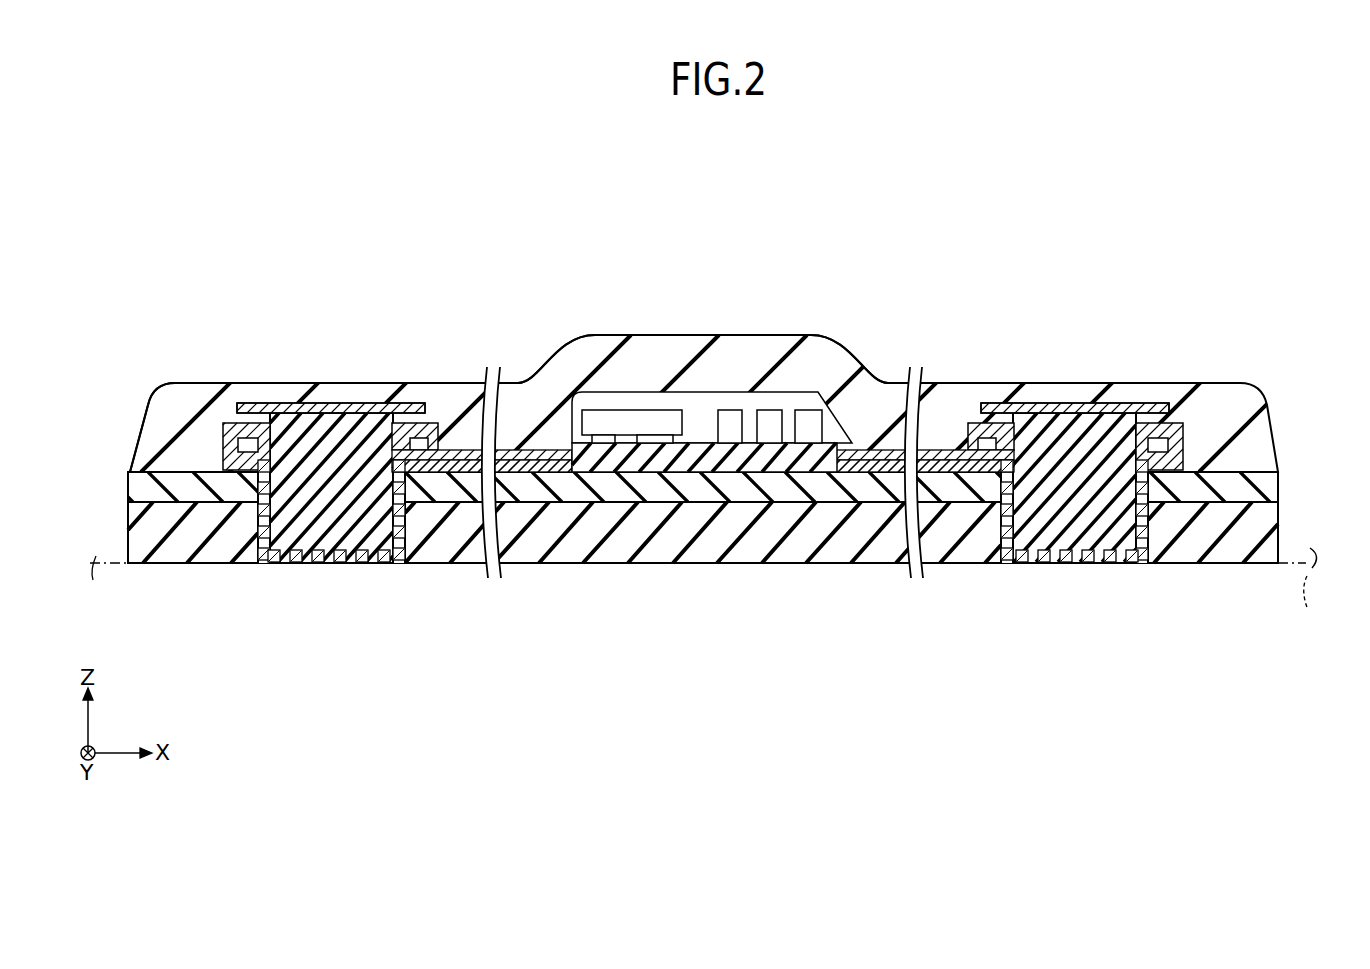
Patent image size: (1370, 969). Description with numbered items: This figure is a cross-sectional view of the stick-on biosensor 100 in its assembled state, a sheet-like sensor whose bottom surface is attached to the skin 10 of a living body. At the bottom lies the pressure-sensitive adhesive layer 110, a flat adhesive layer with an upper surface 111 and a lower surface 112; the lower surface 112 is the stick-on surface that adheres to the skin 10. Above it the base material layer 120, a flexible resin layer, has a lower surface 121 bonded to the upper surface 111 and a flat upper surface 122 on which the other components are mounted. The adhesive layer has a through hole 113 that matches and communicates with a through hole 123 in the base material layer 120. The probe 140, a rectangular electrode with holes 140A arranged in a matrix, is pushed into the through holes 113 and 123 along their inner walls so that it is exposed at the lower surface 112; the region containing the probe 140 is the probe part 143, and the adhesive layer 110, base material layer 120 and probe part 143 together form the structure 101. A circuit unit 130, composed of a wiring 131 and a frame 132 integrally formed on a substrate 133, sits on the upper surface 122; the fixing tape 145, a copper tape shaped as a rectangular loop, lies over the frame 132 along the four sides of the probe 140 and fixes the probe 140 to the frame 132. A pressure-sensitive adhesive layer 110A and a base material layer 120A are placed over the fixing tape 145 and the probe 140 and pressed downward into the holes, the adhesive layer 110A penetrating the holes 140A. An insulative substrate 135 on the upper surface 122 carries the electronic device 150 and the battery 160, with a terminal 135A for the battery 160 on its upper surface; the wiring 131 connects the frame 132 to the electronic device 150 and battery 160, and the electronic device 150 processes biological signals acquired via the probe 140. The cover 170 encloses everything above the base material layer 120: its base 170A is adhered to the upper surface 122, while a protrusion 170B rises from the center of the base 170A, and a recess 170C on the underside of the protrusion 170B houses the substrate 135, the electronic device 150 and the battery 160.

The skin 10 is at (1310, 582).
The stick-on biosensor 100 is at (1335, 301).
The structure 101 is at (710, 565).
The pressure-sensitive adhesive layer 110 is at (1260, 533).
The pressure-sensitive adhesive layer 110A is at (338, 437).
The upper surface 111 is at (168, 500).
The lower surface 112 is at (963, 565).
The through hole 113 is at (263, 520).
The base material layer 120 is at (1260, 488).
The base material layer 120A is at (288, 478).
The lower surface 121 is at (185, 503).
The upper surface 122 is at (178, 470).
The through hole 123 is at (262, 468).
The circuit unit 130 is at (573, 280).
The wiring 131 is at (452, 455).
The frame 132 is at (410, 407).
The substrate 133 is at (532, 458).
The substrate 135 is at (580, 442).
The terminal 135A is at (655, 436).
The probe 140 is at (245, 442).
The holes 140A is at (352, 570).
The probe part 143 is at (403, 632).
The fixing tape 145 is at (227, 455).
The electronic device 150 is at (808, 410).
The battery 160 is at (672, 440).
The cover 170 is at (833, 362).
The base 170A is at (134, 465).
The protrusion 170B is at (668, 335).
The recess 170C is at (703, 392).